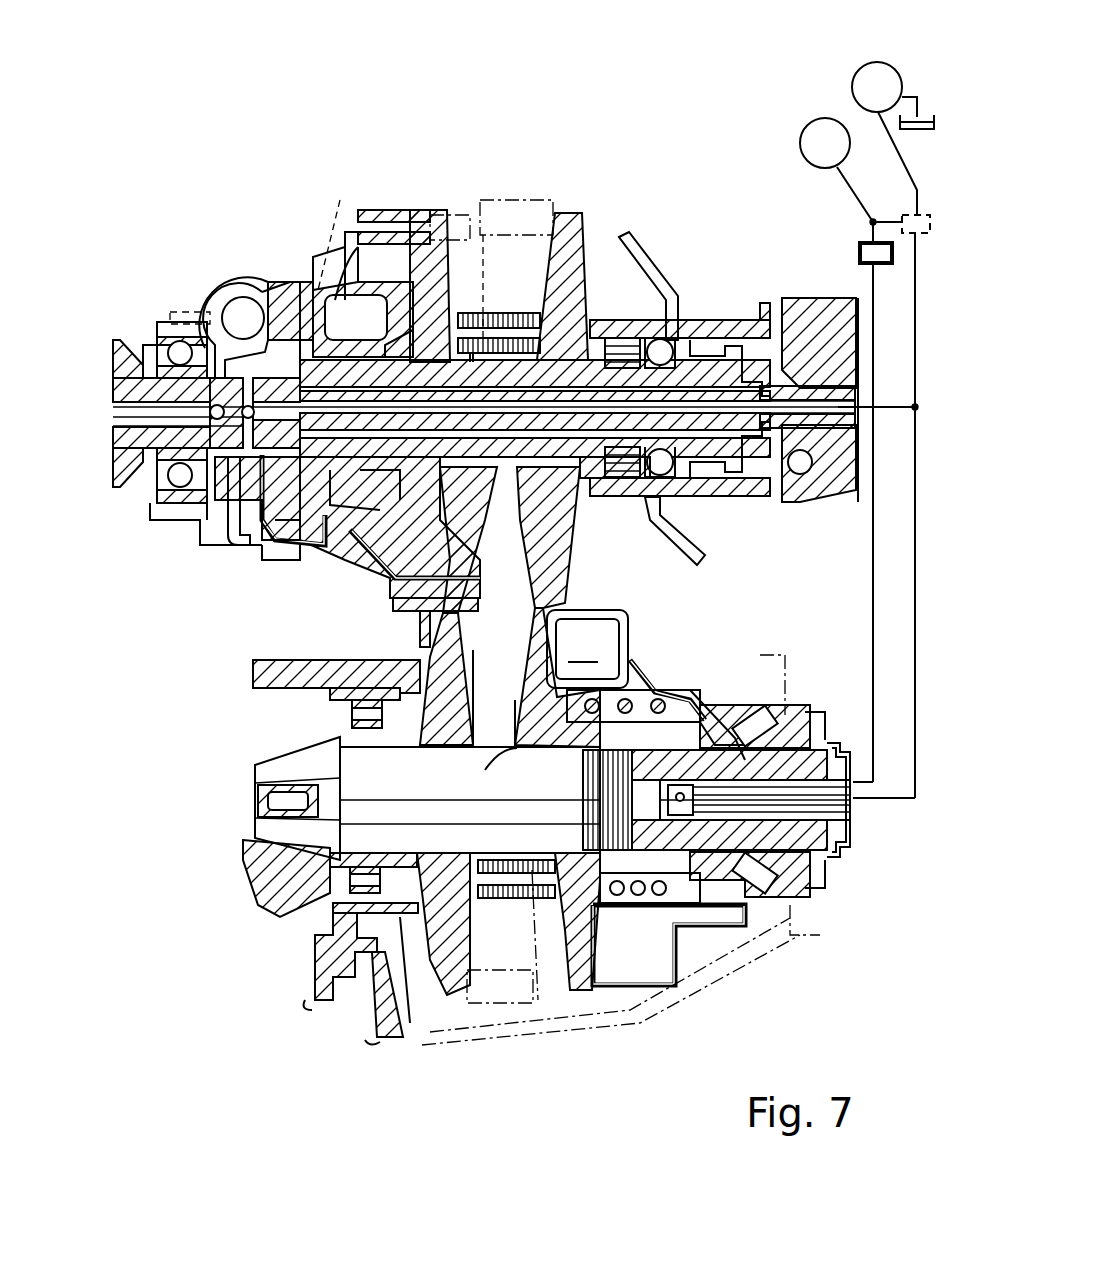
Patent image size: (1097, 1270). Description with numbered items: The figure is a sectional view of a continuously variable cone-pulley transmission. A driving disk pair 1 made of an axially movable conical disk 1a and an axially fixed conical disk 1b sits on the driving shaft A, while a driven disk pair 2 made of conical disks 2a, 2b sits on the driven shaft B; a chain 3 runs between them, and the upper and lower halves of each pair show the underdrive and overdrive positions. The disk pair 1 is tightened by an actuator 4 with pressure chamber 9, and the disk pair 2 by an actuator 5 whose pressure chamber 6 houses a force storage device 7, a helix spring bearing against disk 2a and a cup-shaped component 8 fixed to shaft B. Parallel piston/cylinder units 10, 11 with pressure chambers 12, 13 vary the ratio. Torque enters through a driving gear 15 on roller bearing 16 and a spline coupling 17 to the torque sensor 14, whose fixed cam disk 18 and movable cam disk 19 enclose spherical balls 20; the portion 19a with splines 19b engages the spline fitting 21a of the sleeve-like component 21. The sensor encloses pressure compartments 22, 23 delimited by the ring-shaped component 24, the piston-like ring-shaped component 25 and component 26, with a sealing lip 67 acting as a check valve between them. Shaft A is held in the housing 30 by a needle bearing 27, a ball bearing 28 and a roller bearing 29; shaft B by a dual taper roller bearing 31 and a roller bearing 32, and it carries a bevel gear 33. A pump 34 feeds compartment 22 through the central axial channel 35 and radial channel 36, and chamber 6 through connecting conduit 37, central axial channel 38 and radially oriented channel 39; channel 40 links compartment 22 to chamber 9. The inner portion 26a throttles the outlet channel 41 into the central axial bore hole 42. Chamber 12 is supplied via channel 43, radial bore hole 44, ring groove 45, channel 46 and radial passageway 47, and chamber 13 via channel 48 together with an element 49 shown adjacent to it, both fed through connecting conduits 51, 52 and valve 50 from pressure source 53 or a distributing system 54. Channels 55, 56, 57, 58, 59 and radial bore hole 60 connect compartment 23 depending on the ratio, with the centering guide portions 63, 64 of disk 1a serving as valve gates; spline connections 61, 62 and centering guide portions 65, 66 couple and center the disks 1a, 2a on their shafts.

The disk pair 1 is at (512, 572).
The axially movable conical disk 1a is at (452, 275).
The axially fixed conical disk 1b is at (560, 220).
The disk pair 2 is at (515, 1005).
The axially movable conical disk 2a is at (592, 1000).
The axially fixed conical disk 2b is at (423, 1020).
The chain 3 is at (490, 878).
The actuator 4 is at (365, 565).
The actuator 5 is at (642, 683).
The pressure chamber 6 is at (720, 722).
The force storage device 7 is at (690, 720).
The cup-shaped component 8 is at (690, 935).
The pressure chamber 9 is at (420, 592).
The piston/cylinder unit 10 is at (390, 270).
The piston/cylinder unit 11 is at (648, 613).
The pressure chamber 12 is at (340, 285).
The pressure chamber 13 is at (587, 649).
The torque sensor 14 is at (218, 537).
The driving gear 15 is at (168, 330).
The roller bearing 16 is at (142, 345).
The spline coupling 17 is at (222, 488).
The cam disk 18 is at (225, 305).
The cam disk 19 is at (250, 300).
The portion 19a is at (283, 285).
The splines 19b is at (300, 545).
The spherical balls 20 is at (240, 300).
The component 21 is at (388, 228).
The spline fitting 21a is at (312, 290).
The pressure compartment 22 is at (280, 290).
The pressure compartment 23 is at (328, 280).
The ring-shaped component 24 is at (393, 200).
The ring-shaped component 25 is at (265, 300).
The component 26 is at (192, 300).
The inner portion 26a is at (205, 330).
The needle bearing 27 is at (118, 365).
The ball bearing 28 is at (690, 330).
The roller bearing 29 is at (670, 340).
The housing 30 is at (648, 247).
The dual taper roller bearing 31 is at (770, 862).
The roller bearing 32 is at (365, 870).
The bevel gear 33 is at (265, 782).
The pump 34 is at (880, 62).
The central axial channel 35 is at (718, 345).
The radial channel 36 is at (215, 505).
The connecting conduit 37 is at (888, 795).
The central axial channel 38 is at (850, 800).
The radially oriented channel 39 is at (625, 800).
The channel 40 is at (316, 280).
The outlet channel 41 is at (158, 465).
The central axial bore hole 42 is at (122, 445).
The channel 43 is at (592, 490).
The radial bore hole 44 is at (277, 522).
The ring groove 45 is at (388, 490).
The channel 46 is at (380, 312).
The radial passageway 47 is at (365, 260).
The channel 48 is at (840, 840).
The tapered roller bearing 49 is at (772, 730).
The valve 50 is at (862, 248).
The connecting conduit 51 is at (872, 292).
The connecting conduit 52 is at (872, 628).
The pressure source 53 is at (832, 120).
The volume- or pressure-distributing system 54 is at (930, 217).
The channel 55 is at (322, 530).
The channel 56 is at (246, 525).
The channel 57 is at (365, 355).
The channel 58 is at (615, 345).
The channel 59 is at (462, 292).
The radial bore hole 60 is at (585, 350).
The connection 61 is at (425, 490).
The connection 62 is at (553, 737).
The centering guide portion 63 is at (378, 470).
The centering guide portion 64 is at (458, 325).
The centering guide portion 65 is at (522, 760).
The centering guide portion 66 is at (760, 715).
The sealing lip 67 is at (285, 530).
The driving shaft A is at (205, 478).
The driven shaft B is at (368, 778).